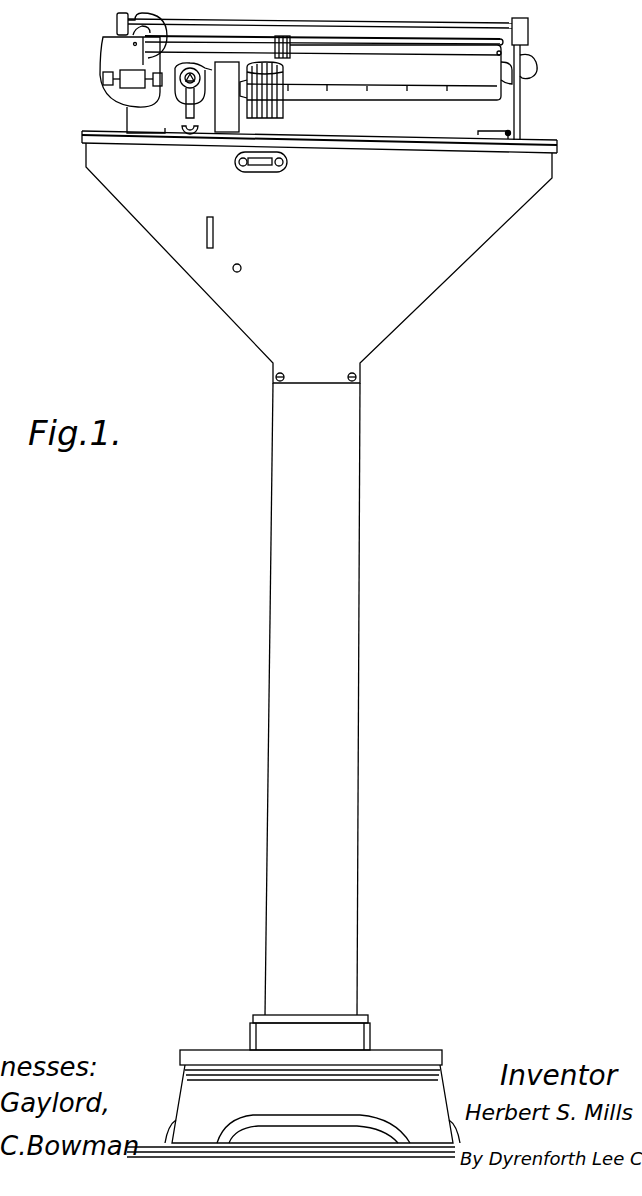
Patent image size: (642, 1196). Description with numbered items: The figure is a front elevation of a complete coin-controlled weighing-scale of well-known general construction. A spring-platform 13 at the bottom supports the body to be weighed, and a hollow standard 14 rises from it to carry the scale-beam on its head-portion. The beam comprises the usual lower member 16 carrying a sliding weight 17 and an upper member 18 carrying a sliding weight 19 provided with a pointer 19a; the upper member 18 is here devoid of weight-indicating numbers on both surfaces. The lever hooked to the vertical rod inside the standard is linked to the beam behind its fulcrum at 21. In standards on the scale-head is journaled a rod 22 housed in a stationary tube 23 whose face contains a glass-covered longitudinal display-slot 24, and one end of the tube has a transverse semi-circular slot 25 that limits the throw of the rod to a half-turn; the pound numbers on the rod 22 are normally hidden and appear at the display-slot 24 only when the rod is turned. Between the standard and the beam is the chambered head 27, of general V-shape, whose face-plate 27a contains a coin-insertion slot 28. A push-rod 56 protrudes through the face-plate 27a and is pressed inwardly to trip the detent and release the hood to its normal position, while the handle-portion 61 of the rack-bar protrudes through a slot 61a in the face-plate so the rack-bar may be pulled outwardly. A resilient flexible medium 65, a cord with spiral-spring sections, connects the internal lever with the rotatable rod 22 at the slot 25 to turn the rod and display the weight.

The spring-platform 13 is at (398, 1055).
The hollow standard 14 is at (292, 787).
The lower member 16 is at (377, 87).
The sliding weight 17 is at (284, 106).
The upper member 18 is at (386, 46).
The sliding weight 19 is at (290, 50).
The pointer 19a is at (260, 22).
The fulcrum 21 is at (231, 124).
The rod 22 is at (500, 30).
The stationary tube 23 is at (122, 30).
The display-slot 24 is at (147, 30).
The transverse semi-circular slot 25 is at (117, 18).
The chambered head 27 is at (500, 228).
The face-plate 27a is at (363, 211).
The coin-insertion slot 28 is at (262, 172).
The push-rod 56 is at (242, 265).
The handle-portion 61 is at (207, 242).
The slot 61a is at (205, 230).
The resilient flexible medium 65 is at (150, 55).